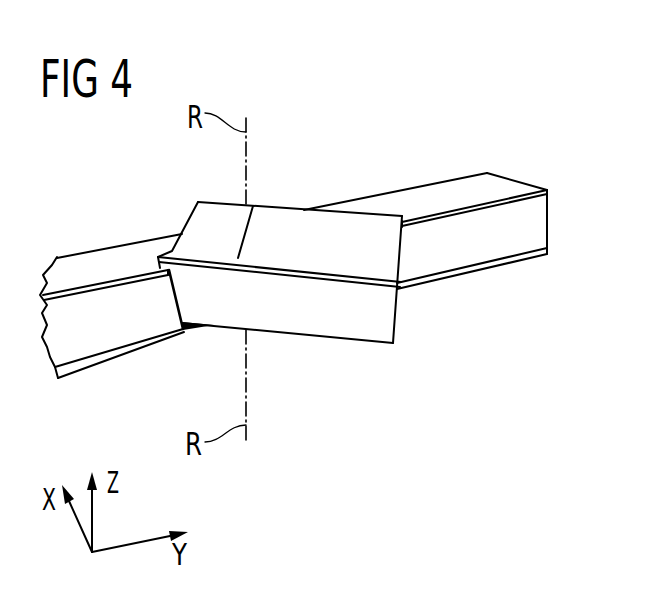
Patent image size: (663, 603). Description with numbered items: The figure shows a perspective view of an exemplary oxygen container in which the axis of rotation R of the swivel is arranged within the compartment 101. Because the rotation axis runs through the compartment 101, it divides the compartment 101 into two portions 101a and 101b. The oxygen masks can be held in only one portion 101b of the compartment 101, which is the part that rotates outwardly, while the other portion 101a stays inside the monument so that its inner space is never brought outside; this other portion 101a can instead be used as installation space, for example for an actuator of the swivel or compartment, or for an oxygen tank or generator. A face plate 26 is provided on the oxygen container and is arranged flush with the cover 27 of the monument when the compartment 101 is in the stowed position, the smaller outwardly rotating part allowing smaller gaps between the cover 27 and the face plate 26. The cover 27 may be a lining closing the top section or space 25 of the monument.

The compartment 101 is at (273, 243).
The portion 101a is at (197, 220).
The portion 101b is at (340, 232).
The top section 25 is at (293, 247).
The face plate 26 is at (353, 330).
The cover 27 is at (488, 245).